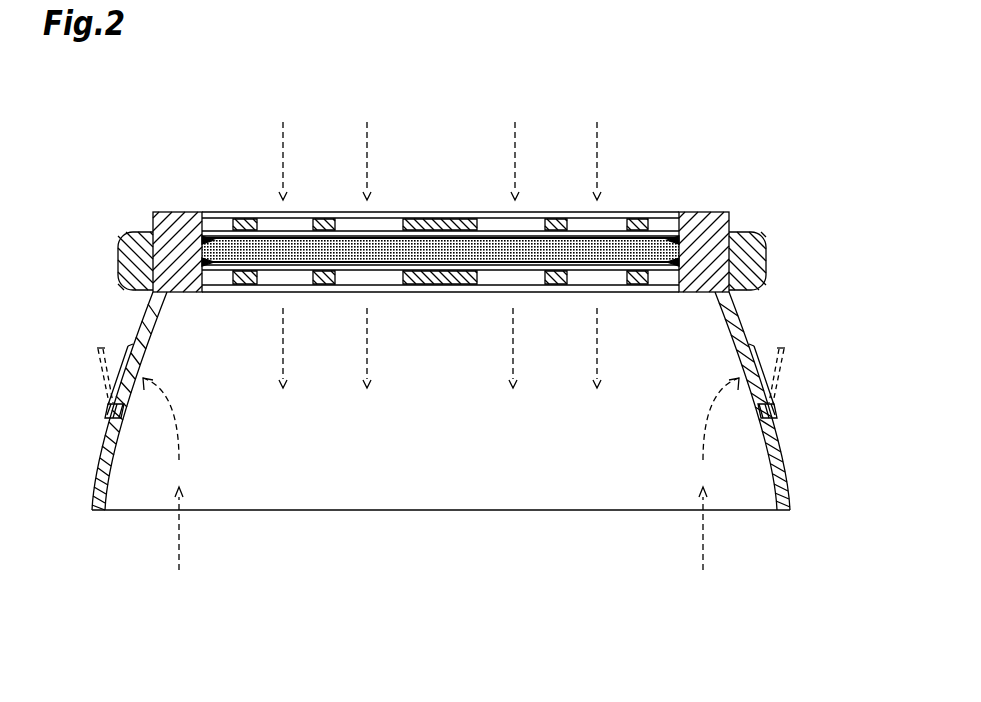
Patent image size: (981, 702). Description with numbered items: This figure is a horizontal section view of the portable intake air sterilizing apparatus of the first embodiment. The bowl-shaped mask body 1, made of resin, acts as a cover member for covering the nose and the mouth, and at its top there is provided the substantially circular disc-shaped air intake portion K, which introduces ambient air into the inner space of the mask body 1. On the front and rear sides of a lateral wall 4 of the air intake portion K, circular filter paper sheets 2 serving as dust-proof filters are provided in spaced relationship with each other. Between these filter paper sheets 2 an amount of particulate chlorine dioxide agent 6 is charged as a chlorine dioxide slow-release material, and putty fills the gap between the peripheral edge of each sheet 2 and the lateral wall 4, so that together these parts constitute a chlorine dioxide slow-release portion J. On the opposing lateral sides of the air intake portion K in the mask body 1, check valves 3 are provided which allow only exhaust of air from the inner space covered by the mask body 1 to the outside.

The mask body 1 is at (93, 476).
The circular filter paper sheets 2 is at (300, 237).
The check valves 3 is at (127, 356).
The lateral wall 4 is at (729, 218).
The particulate chlorine dioxide agent 6 is at (277, 254).
The chlorine dioxide slow-release portion J is at (382, 266).
The air intake portion K is at (477, 205).